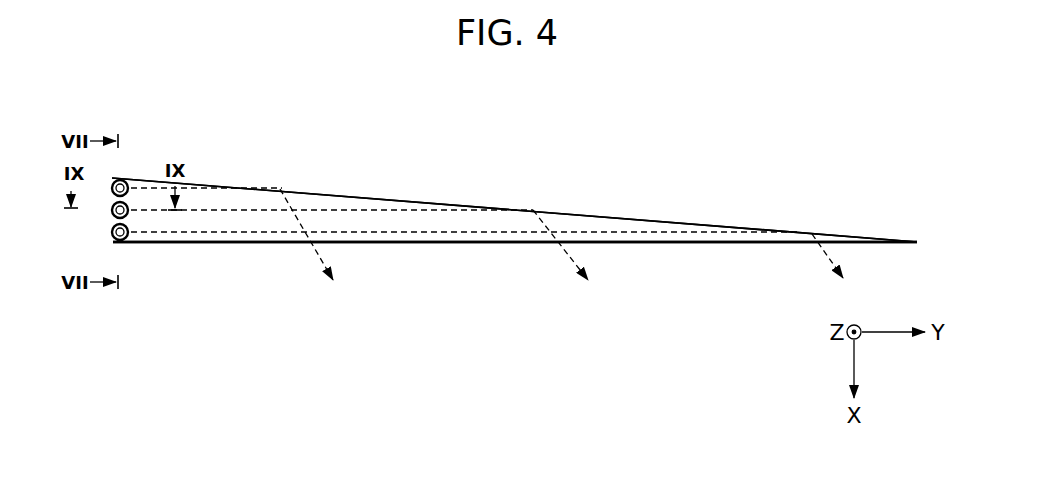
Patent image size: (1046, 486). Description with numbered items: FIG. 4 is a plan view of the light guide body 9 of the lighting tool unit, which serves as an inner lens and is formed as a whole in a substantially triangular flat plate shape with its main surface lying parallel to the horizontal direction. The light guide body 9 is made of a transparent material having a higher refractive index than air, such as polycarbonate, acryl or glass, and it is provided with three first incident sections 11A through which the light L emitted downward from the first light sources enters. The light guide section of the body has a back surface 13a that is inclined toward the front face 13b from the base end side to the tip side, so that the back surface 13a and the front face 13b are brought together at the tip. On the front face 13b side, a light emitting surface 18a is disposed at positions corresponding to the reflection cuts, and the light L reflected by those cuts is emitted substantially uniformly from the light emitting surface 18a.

The light guide body 9 is at (514, 201).
The first incident sections 11A is at (112, 236).
The back surface 13a is at (723, 222).
The front face 13b is at (737, 244).
The light emitting surface 18a is at (427, 244).
The light L is at (567, 254).